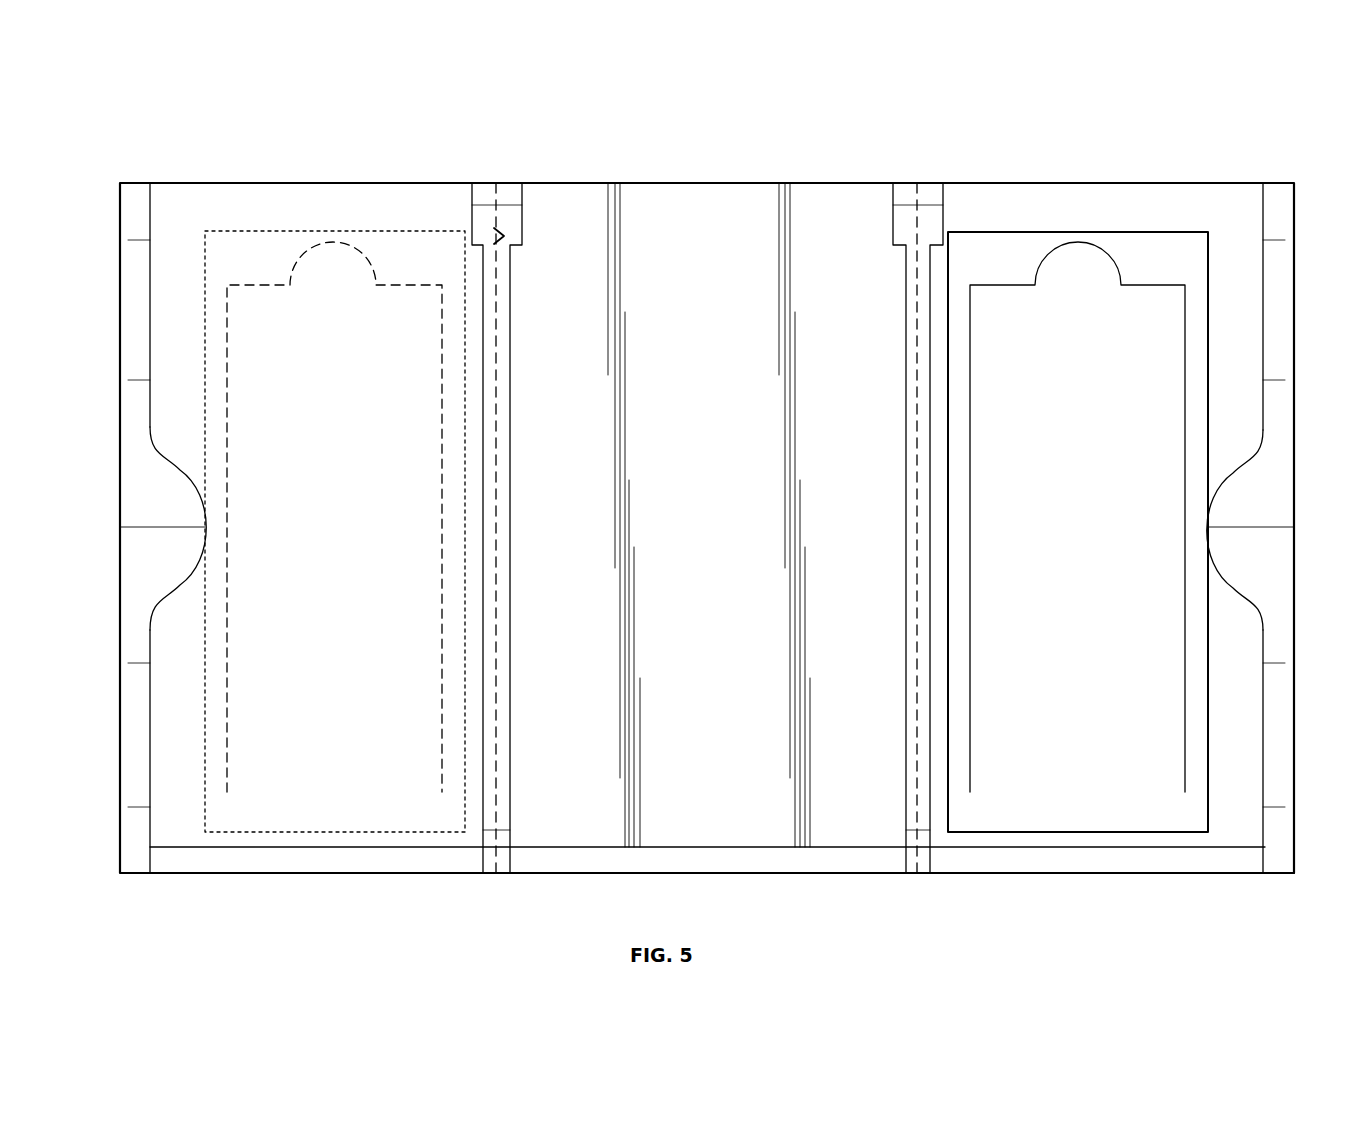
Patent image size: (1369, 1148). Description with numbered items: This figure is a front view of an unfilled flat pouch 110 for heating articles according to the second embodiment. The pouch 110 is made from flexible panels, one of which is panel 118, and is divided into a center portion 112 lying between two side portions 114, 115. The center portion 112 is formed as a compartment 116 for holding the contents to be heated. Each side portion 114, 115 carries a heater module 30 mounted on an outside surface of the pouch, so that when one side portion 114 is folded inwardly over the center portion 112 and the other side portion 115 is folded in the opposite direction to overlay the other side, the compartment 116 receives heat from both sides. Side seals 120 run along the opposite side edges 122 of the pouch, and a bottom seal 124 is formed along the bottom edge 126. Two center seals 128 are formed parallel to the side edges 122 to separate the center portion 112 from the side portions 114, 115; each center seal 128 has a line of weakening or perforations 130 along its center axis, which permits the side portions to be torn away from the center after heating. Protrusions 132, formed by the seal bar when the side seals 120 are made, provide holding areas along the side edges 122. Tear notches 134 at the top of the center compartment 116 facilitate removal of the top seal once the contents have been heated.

The flat pouch 110 is at (823, 98).
The panel 118 is at (177, 210).
The side portion 114 is at (240, 172).
The center portion 112 is at (615, 166).
The compartment 116 is at (782, 166).
The tear notch 134 is at (903, 240).
The side portion 115 is at (1100, 170).
The heater module 30 is at (302, 815).
The side edge 122 is at (140, 480).
The line of weakening or perforations 130 is at (497, 491).
The center seal 128 is at (509, 660).
The protrusion 132 is at (1265, 478).
The side seal 120 is at (1287, 508).
The bottom seal 124 is at (1067, 874).
The bottom edge 126 is at (1197, 874).